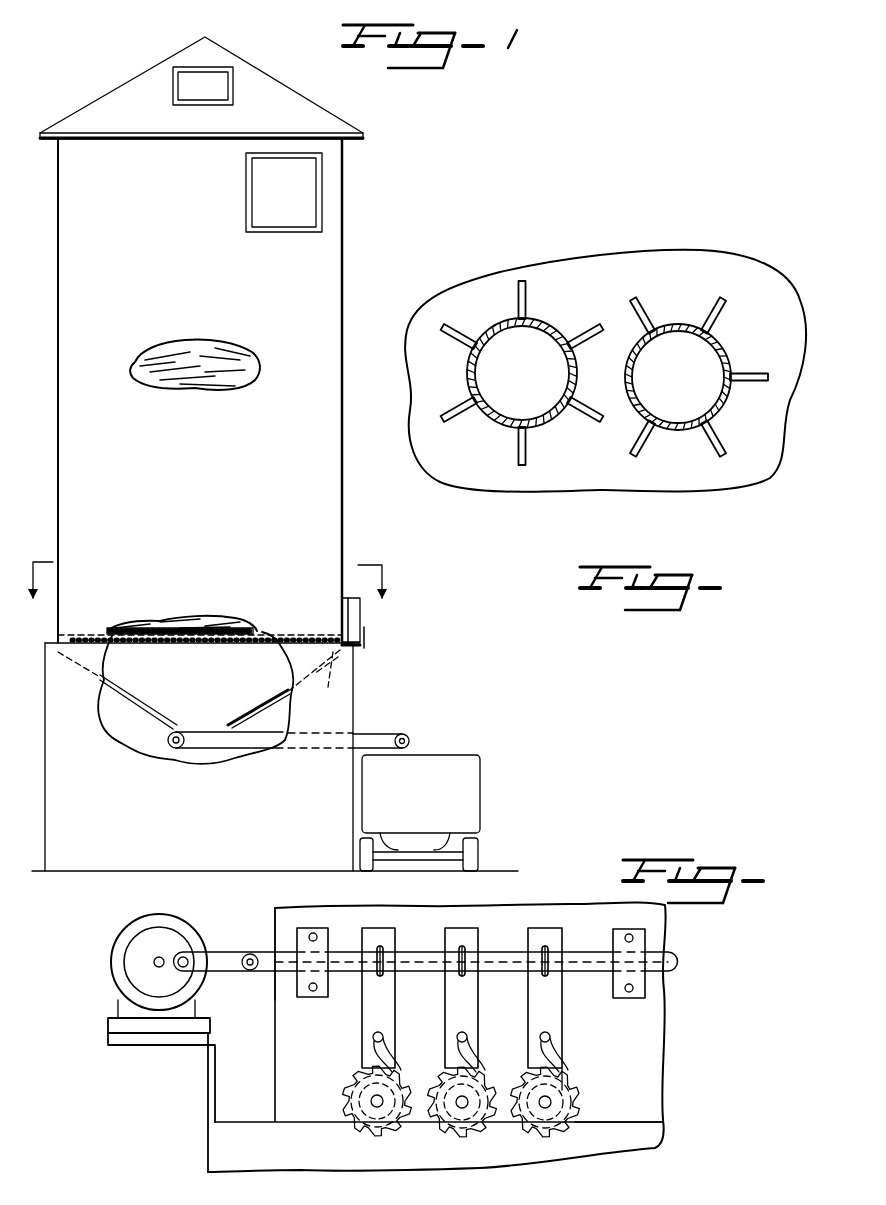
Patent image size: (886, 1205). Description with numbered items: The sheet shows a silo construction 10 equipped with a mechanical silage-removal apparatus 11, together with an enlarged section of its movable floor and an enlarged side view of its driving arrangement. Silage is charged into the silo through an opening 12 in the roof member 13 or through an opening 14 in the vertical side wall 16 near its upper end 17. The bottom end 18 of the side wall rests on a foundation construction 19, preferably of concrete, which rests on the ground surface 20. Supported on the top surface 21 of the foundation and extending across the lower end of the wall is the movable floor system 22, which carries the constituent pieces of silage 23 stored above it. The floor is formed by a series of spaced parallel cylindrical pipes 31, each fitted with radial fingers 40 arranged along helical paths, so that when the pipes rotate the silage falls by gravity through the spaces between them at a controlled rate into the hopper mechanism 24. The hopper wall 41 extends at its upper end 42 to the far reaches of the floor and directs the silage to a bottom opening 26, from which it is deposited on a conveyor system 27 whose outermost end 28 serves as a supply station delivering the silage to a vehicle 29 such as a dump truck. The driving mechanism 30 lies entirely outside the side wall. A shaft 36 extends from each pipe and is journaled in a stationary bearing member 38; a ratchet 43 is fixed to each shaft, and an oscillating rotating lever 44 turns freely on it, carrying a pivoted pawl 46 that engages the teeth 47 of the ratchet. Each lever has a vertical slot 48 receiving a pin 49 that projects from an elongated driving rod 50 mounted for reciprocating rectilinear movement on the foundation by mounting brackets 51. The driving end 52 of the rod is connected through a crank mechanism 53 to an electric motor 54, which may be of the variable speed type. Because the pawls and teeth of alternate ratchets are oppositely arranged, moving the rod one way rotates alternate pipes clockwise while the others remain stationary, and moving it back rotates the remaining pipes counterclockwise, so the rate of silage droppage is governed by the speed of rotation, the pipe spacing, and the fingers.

In FIG. 1, the silo construction 10 is at (372, 207).
In FIG. 1, the mechanical silage-removal apparatus 11 is at (265, 605).
In FIG. 1, the opening 12 is at (232, 80).
In FIG. 1, the roof member 13 is at (112, 91).
In FIG. 1, the opening 14 is at (316, 183).
In FIG. 1, the vertical side wall 16 is at (349, 265).
In FIG. 1, the upper end 17 is at (346, 152).
In FIG. 1, the bottom end 18 is at (57, 633).
In FIG. 1, the foundation construction 19 is at (46, 742).
In FIG. 3, the foundation construction 19 is at (292, 925).
In FIG. 1, the ground surface 20 is at (494, 870).
In FIG. 1, the top surface 21 is at (54, 645).
In FIG. 1, the movable floor system 22 is at (222, 364).
In FIG. 1, the constituent pieces of silage 23 is at (250, 628).
In FIG. 1, the hopper mechanism 24 is at (122, 700).
In FIG. 1, the bottom opening 26 is at (177, 732).
In FIG. 1, the conveyor system 27 is at (211, 749).
In FIG. 1, the outermost end 28 is at (406, 731).
In FIG. 1, the vehicle 29 is at (482, 786).
In FIG. 1, the driving mechanism 30 is at (370, 632).
In FIG. 3, the driving mechanism 30 is at (629, 1059).
In FIG. 4, the cylindrical pipes 31 is at (562, 313).
In FIG. 3, the shaft 36 is at (371, 1102).
In FIG. 3, the bearing member 38 is at (574, 1070).
In FIG. 4, the radial fingers 40 is at (498, 300).
In FIG. 1, the hopper wall 41 is at (258, 714).
In FIG. 1, the upper end 42 is at (199, 683).
In FIG. 3, the ratchets 43 is at (370, 1140).
In FIG. 3, the oscillating rotating levers 44 is at (372, 1015).
In FIG. 3, the pawl 46 is at (380, 1050).
In FIG. 3, the teeth 47 is at (578, 1134).
In FIG. 3, the vertical slot 48 is at (377, 955).
In FIG. 3, the pin 49 is at (380, 973).
In FIG. 3, the driving rod 50 is at (412, 960).
In FIG. 3, the mounting brackets 51 is at (306, 967).
In FIG. 3, the driving end 52 is at (263, 969).
In FIG. 3, the crank mechanism 53 is at (209, 958).
In FIG. 3, the electric motor 54 is at (133, 969).